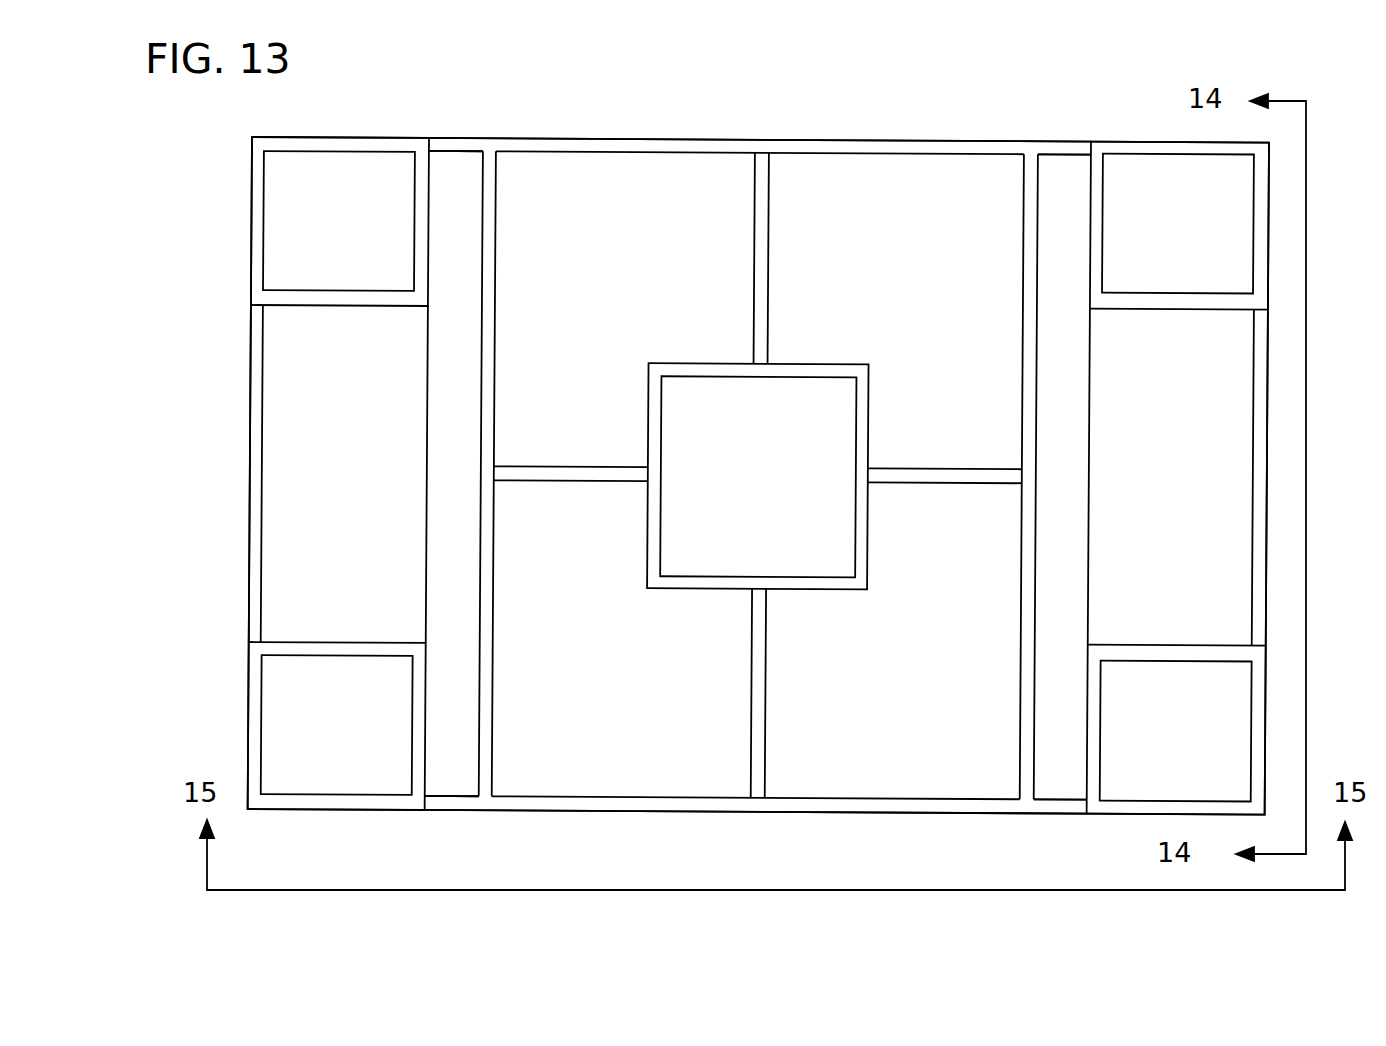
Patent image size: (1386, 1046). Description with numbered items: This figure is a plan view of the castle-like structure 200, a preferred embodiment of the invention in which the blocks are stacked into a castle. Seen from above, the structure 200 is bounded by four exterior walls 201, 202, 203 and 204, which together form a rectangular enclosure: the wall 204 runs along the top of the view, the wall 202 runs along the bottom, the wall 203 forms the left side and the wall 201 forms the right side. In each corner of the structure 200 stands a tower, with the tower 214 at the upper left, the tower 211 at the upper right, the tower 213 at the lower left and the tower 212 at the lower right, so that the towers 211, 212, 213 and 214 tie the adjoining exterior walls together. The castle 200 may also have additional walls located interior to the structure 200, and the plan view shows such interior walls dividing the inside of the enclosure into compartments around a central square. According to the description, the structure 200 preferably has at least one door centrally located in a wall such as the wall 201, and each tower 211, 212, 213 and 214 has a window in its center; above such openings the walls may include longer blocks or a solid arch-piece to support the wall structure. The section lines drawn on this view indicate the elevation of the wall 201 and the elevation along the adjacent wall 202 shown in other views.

The castle-like structure 200 is at (773, 78).
The exterior wall 201 is at (1262, 423).
The exterior wall 202 is at (750, 805).
The exterior wall 203 is at (247, 433).
The exterior wall 204 is at (552, 142).
The tower 211 is at (1118, 148).
The tower 212 is at (1110, 807).
The tower 213 is at (343, 805).
The tower 214 is at (313, 147).